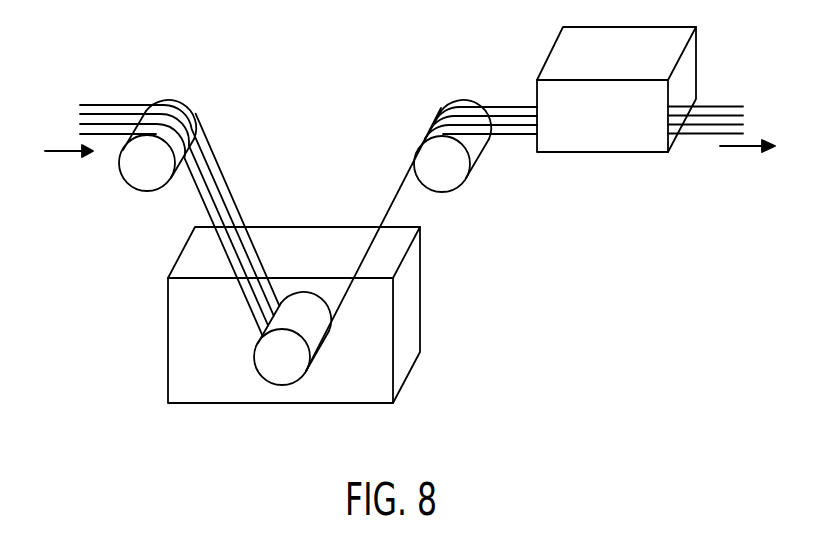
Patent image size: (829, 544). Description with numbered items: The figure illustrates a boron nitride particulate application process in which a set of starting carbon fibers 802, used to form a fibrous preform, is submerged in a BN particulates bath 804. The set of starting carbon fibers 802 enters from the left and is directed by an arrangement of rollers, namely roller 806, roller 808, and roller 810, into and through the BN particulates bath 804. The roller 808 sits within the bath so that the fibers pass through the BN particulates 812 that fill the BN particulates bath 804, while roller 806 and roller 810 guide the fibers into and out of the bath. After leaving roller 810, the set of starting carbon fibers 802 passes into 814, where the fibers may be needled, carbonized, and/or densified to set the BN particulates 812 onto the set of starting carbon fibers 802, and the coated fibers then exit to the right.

The set of starting carbon fibers 802 is at (222, 182).
The BN particulates bath 804 is at (185, 333).
The roller 806 is at (147, 172).
The roller 808 is at (282, 358).
The roller 810 is at (442, 165).
The BN particulates 812 is at (313, 265).
The needling, carbonizing, and/or densifying station 814 is at (635, 67).